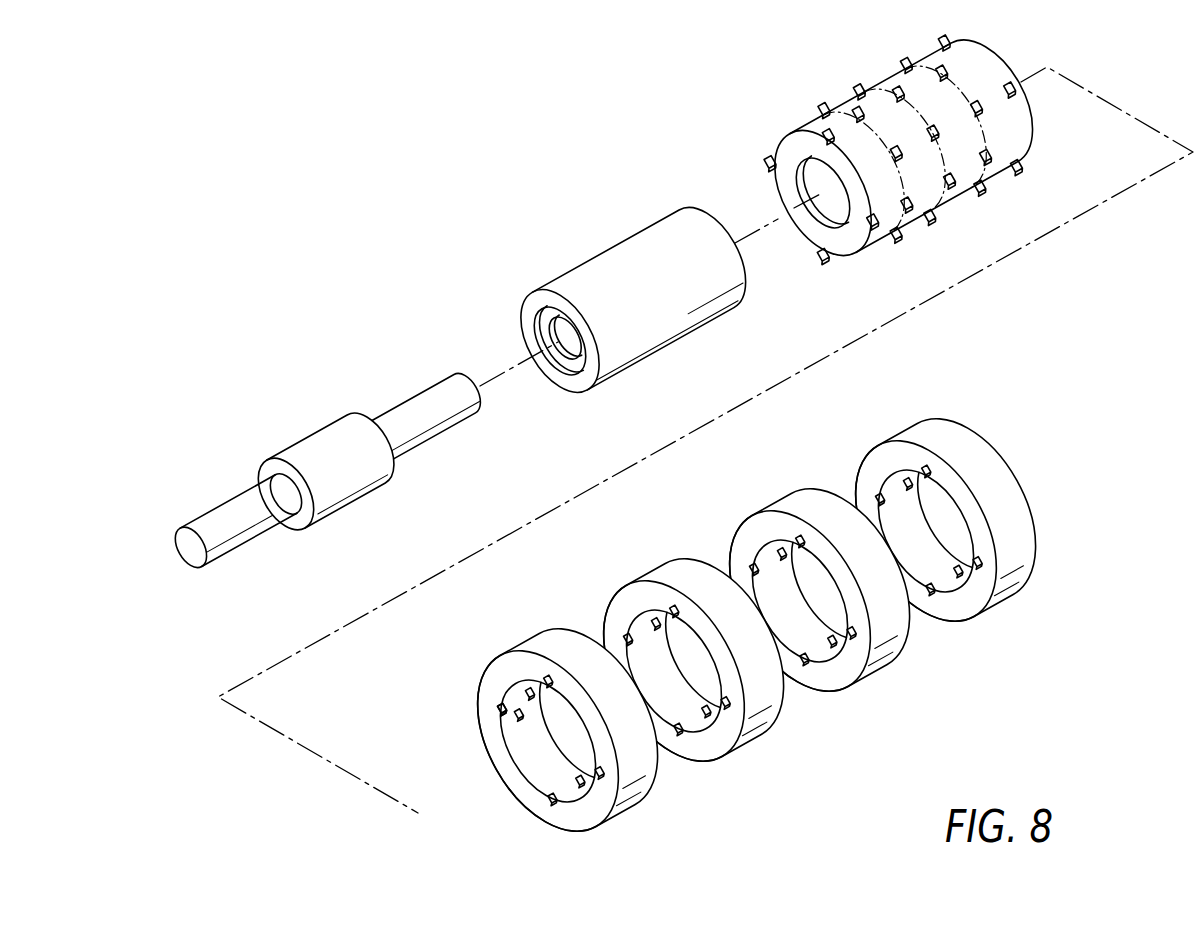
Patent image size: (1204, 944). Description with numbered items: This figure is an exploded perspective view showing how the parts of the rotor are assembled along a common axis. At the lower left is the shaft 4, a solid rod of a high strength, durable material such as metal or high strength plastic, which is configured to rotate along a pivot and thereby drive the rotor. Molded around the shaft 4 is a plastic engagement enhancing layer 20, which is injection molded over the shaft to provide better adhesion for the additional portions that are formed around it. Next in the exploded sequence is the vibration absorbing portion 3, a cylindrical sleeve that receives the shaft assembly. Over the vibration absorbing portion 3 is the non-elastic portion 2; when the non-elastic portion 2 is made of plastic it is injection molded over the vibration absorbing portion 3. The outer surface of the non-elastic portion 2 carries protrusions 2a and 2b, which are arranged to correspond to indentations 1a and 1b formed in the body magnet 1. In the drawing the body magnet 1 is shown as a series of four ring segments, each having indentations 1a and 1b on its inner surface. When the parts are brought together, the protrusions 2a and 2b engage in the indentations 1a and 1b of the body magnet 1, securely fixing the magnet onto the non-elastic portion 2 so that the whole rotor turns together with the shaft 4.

The body magnet 1 is at (936, 420).
The indentation 1a is at (495, 709).
The indentation 1b is at (517, 733).
The non-elastic portion 2 is at (812, 122).
The protrusion 2a is at (878, 226).
The protrusion 2b is at (912, 210).
The vibration absorbing portion 3 is at (625, 257).
The shaft 4 is at (222, 513).
The plastic engagement enhancing layer 20 is at (308, 443).